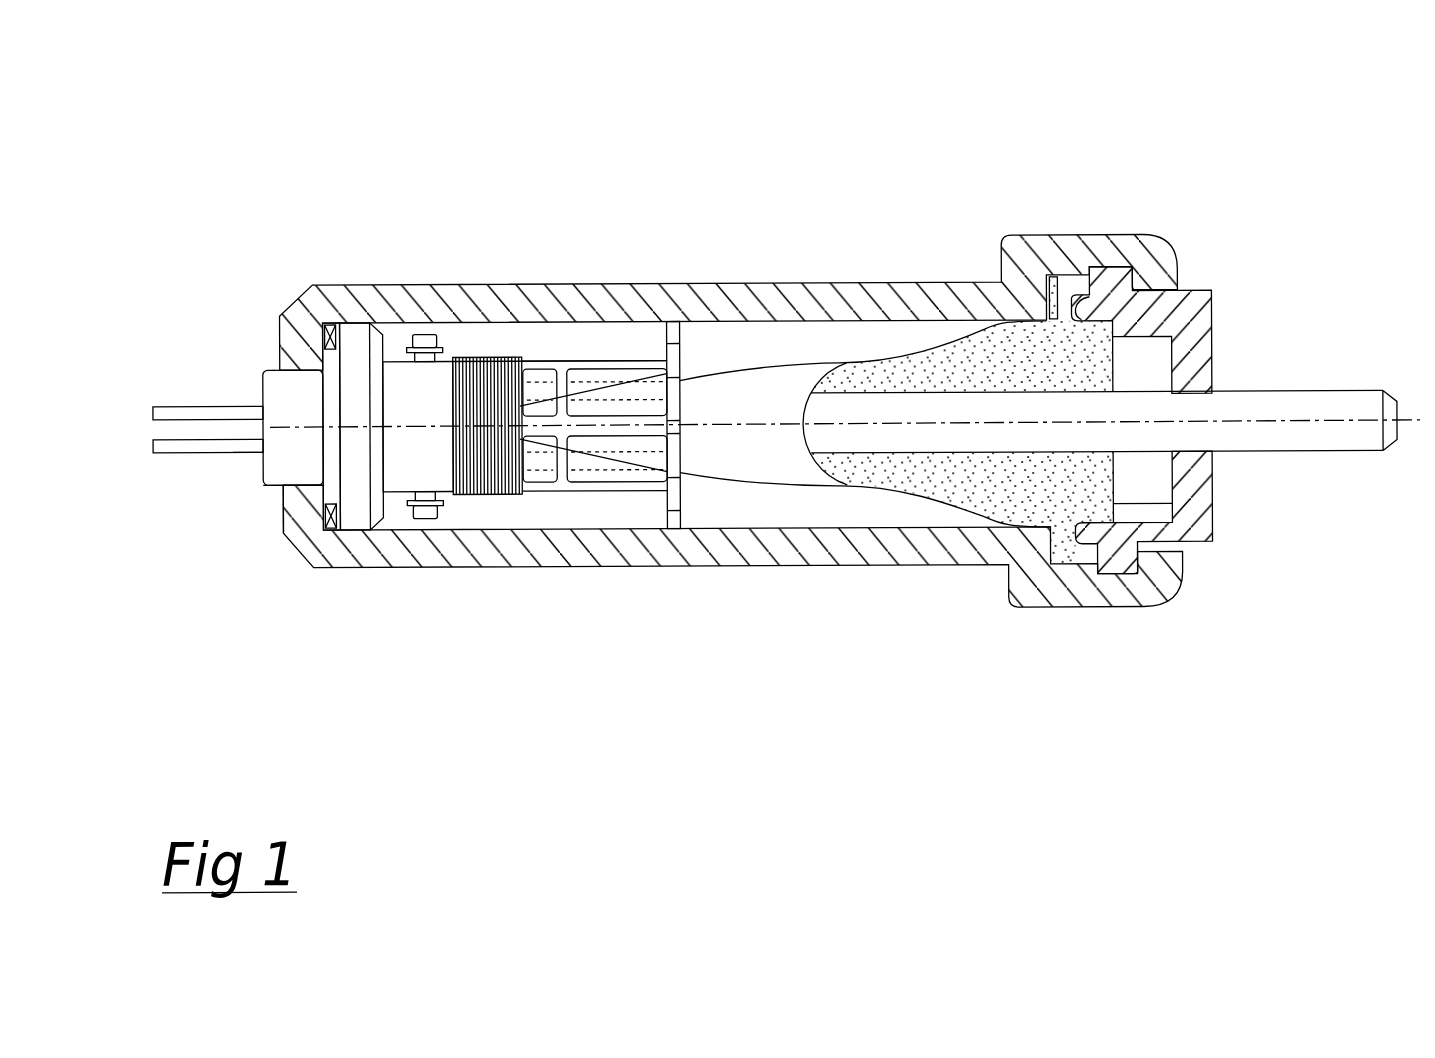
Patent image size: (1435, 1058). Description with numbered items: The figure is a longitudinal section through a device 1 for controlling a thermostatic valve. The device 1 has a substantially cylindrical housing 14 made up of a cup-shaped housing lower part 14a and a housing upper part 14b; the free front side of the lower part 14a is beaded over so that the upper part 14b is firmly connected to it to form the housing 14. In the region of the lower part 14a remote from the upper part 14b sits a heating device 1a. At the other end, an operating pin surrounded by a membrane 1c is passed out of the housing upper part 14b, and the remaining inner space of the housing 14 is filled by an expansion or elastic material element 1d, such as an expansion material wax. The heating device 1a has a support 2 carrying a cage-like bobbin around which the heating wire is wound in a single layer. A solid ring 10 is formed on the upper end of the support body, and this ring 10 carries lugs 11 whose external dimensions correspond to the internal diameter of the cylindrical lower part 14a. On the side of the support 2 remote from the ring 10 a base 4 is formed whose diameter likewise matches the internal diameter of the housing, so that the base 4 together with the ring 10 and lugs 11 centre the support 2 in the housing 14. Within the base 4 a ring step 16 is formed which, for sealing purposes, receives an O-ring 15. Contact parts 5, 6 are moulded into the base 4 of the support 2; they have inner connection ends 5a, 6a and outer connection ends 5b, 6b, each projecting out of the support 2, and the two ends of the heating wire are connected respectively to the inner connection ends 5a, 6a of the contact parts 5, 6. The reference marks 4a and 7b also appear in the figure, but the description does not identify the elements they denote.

The device 1 is at (338, 618).
The heating device 1a is at (533, 342).
The membrane 1c is at (978, 469).
The expansion or elastic material element 1d is at (875, 508).
The support 2 is at (427, 393).
The base 4 is at (360, 508).
The connector seat 4a is at (277, 478).
The contact part 5 is at (242, 401).
The inner connection end 5a is at (422, 335).
The outer connection end 5b is at (195, 410).
The contact part 6 is at (233, 458).
The inner connection end 6a is at (433, 516).
The outer connection end 6b is at (195, 455).
The piston rod 7b is at (1280, 441).
The ring 10 is at (687, 356).
The lugs 11 is at (678, 322).
The housing 14 is at (880, 267).
The housing lower part 14a is at (548, 549).
The housing upper part 14b is at (1215, 315).
The O-ring 15 is at (327, 328).
The ring step 16 is at (330, 395).